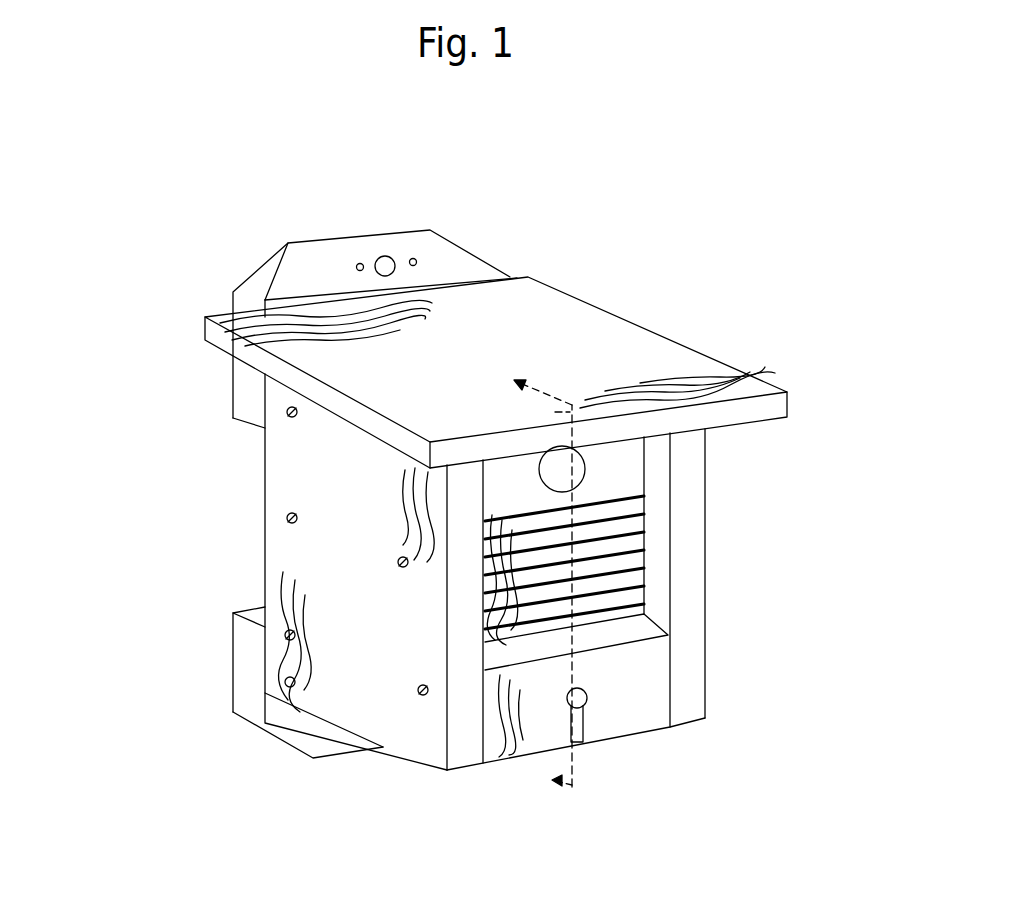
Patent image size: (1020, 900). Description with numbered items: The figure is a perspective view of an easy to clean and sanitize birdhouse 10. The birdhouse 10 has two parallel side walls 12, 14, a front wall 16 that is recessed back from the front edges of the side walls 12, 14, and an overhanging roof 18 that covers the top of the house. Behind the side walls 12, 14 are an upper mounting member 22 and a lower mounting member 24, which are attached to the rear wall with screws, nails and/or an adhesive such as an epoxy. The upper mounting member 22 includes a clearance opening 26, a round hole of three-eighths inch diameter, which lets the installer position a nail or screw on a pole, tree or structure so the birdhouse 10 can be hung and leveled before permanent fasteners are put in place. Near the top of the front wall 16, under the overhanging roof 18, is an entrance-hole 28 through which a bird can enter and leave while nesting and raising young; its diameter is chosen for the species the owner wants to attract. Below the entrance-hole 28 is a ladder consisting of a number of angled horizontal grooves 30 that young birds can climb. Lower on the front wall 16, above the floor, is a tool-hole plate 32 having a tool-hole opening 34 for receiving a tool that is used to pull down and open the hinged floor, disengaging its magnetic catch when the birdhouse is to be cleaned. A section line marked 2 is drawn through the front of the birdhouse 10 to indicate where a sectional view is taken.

The birdhouse 10 is at (162, 357).
The side wall 12 is at (302, 485).
The side wall 14 is at (697, 495).
The front wall 16 is at (633, 473).
The overhanging roof 18 is at (548, 338).
The upper mounting member 22 is at (275, 262).
The lower mounting member 24 is at (240, 672).
The clearance opening 26 is at (384, 255).
The entrance-hole 28 is at (575, 476).
The angled horizontal grooves 30 is at (645, 547).
The tool-hole plate 32 is at (635, 702).
The tool-hole opening 34 is at (588, 686).
The section line 2- 2 is at (533, 576).